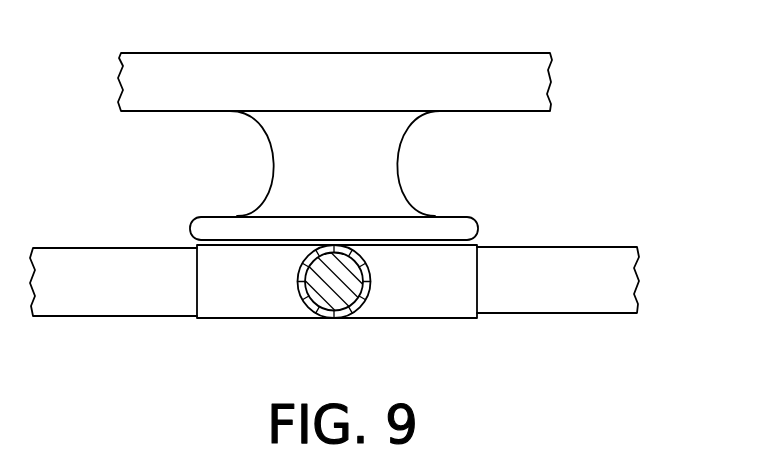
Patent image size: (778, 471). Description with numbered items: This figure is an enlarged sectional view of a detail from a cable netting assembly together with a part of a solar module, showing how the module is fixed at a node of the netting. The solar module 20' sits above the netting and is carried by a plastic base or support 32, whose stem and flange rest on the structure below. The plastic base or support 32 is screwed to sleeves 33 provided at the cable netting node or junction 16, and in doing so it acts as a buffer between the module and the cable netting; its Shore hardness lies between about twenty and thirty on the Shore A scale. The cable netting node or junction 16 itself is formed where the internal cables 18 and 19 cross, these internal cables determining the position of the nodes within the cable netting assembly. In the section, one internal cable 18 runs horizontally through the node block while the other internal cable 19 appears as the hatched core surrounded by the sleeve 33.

The solar module 20' is at (405, 61).
The plastic base or support 32 is at (287, 178).
The cable netting node or junction 16 is at (458, 260).
The internal cable 18 is at (622, 278).
The sleeve 33 is at (369, 295).
The internal cable 19 is at (323, 290).